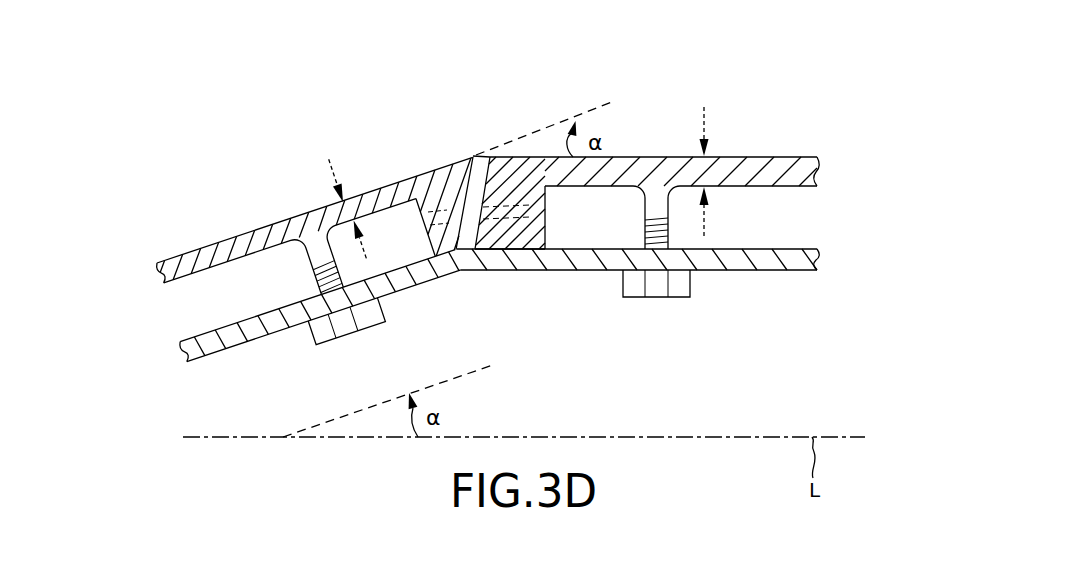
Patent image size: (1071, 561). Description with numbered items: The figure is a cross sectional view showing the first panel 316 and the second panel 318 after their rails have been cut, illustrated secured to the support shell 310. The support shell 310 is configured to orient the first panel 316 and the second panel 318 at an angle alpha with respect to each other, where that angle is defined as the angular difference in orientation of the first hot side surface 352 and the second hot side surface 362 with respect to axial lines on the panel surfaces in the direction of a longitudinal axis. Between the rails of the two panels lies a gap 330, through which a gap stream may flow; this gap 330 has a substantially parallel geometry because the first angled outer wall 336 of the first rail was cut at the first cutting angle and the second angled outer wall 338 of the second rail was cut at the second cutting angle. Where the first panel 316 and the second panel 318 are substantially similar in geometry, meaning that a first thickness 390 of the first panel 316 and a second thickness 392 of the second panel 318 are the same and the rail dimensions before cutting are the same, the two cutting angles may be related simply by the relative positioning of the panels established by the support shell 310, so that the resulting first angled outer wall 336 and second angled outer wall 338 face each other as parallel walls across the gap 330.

The support shell 310 is at (248, 341).
The first panel 316 is at (186, 252).
The second panel 318 is at (798, 156).
The gap 330 is at (476, 138).
The first angled outer wall 336 is at (467, 185).
The second angled outer wall 338 is at (480, 188).
The first hot side surface 352 is at (268, 224).
The second hot side surface 362 is at (742, 156).
The first thickness 390 is at (327, 158).
The second thickness 392 is at (706, 118).